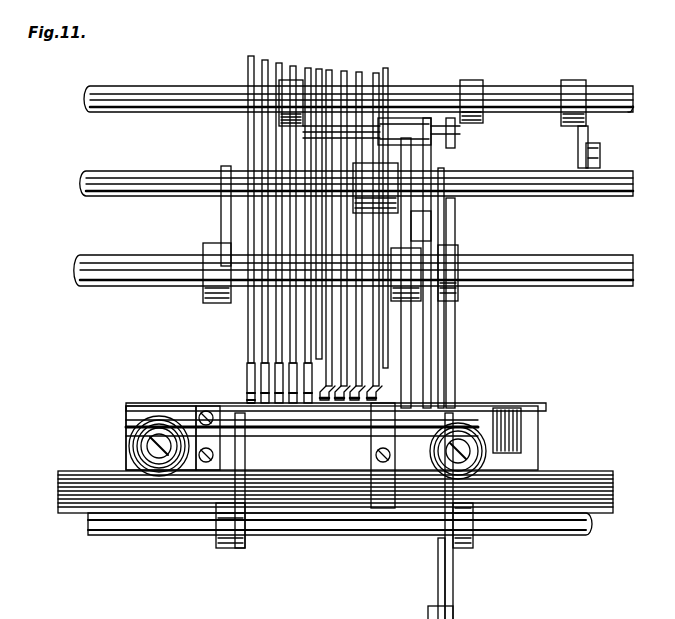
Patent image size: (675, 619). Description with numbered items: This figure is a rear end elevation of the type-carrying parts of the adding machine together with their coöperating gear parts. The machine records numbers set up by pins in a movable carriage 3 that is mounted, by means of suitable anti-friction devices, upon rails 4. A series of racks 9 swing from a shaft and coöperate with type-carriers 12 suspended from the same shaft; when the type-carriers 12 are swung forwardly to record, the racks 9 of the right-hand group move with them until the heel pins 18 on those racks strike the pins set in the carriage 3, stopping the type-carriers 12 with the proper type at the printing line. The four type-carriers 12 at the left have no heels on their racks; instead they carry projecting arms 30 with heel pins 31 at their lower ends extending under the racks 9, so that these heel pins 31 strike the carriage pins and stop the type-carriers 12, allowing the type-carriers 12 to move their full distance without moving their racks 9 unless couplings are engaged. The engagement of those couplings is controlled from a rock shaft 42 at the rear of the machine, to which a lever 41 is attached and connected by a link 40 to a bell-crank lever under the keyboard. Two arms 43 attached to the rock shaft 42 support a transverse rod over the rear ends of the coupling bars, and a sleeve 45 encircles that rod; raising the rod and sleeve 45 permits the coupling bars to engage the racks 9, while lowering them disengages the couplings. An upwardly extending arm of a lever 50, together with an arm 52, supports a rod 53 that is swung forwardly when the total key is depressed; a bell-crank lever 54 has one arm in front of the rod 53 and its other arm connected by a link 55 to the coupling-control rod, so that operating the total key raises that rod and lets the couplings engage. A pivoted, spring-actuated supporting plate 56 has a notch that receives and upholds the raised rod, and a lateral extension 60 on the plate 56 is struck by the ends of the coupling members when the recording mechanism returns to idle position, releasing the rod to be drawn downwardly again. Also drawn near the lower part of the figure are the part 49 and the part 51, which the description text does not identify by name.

The movable carriage 3 is at (332, 455).
The rails 4 is at (74, 470).
The racks 9 is at (240, 340).
The type-carriers 12 is at (282, 62).
The heel pins 18 is at (240, 378).
The projecting arms 30 is at (340, 345).
The heel pins 31 is at (336, 413).
The link 40 is at (585, 142).
The lever 41 is at (572, 140).
The rock shaft 42 is at (525, 90).
The arms 43 is at (466, 128).
The sleeve 45 is at (340, 145).
The lower rod 49 is at (430, 598).
The lever 50 is at (447, 595).
The block 51 is at (520, 525).
The arm 52 is at (240, 488).
The rod 53 is at (325, 428).
The bell-crank lever 54 is at (436, 388).
The link 55 is at (436, 300).
The supporting plate 56 is at (425, 160).
The lateral extension 60 is at (404, 131).